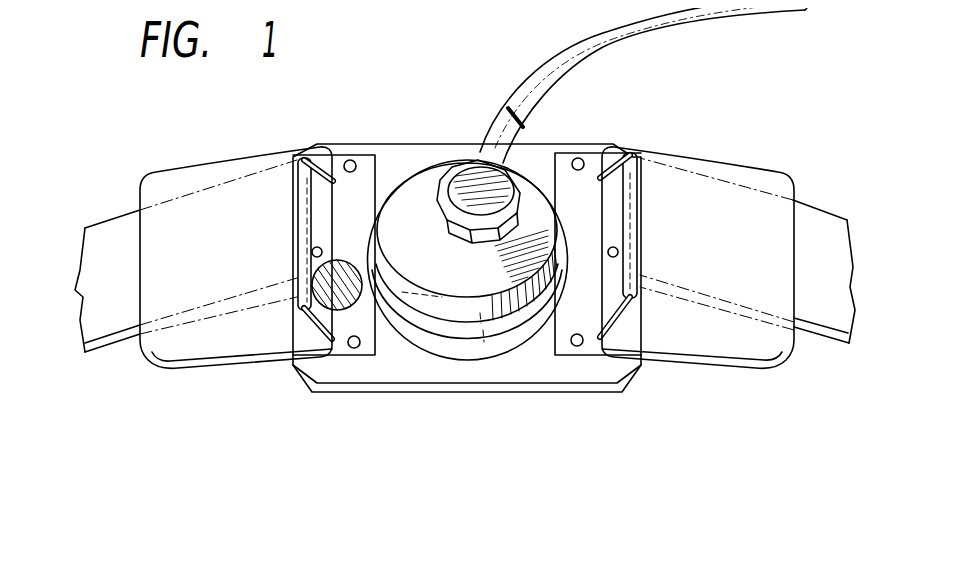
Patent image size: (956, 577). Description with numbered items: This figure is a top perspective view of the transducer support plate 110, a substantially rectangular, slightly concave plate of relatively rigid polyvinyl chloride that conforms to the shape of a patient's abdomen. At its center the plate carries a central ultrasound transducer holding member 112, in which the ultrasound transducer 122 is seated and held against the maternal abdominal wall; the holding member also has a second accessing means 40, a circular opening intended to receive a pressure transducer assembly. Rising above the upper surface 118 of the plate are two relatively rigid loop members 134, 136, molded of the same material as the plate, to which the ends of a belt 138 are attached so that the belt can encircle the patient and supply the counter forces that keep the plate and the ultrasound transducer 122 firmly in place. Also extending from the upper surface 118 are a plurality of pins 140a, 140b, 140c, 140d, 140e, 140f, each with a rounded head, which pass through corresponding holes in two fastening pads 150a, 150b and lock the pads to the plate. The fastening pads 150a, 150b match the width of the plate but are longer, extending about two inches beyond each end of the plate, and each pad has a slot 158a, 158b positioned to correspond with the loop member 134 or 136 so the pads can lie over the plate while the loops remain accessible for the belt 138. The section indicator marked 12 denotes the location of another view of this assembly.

The transducer support plate 110 is at (466, 420).
The central ultrasound transducer holding member 112 is at (507, 392).
The upper surface of the transducer support plate 118 is at (423, 370).
The ultrasound transducer 122 is at (422, 192).
The loop member 134 is at (308, 318).
The loop member 136 is at (618, 320).
The belt 138 is at (118, 222).
The pin 140a is at (350, 158).
The pin 140b is at (311, 252).
The pin 140c is at (353, 349).
The pin 140d is at (577, 347).
The pin 140e is at (618, 252).
The pin 140f is at (578, 158).
The fastening pad 150a is at (172, 348).
The fastening pad 150b is at (743, 343).
The slot 158a is at (310, 214).
The slot 158b is at (603, 197).
The second accessing means 40 is at (356, 307).
The section line 12 is at (53, 263).